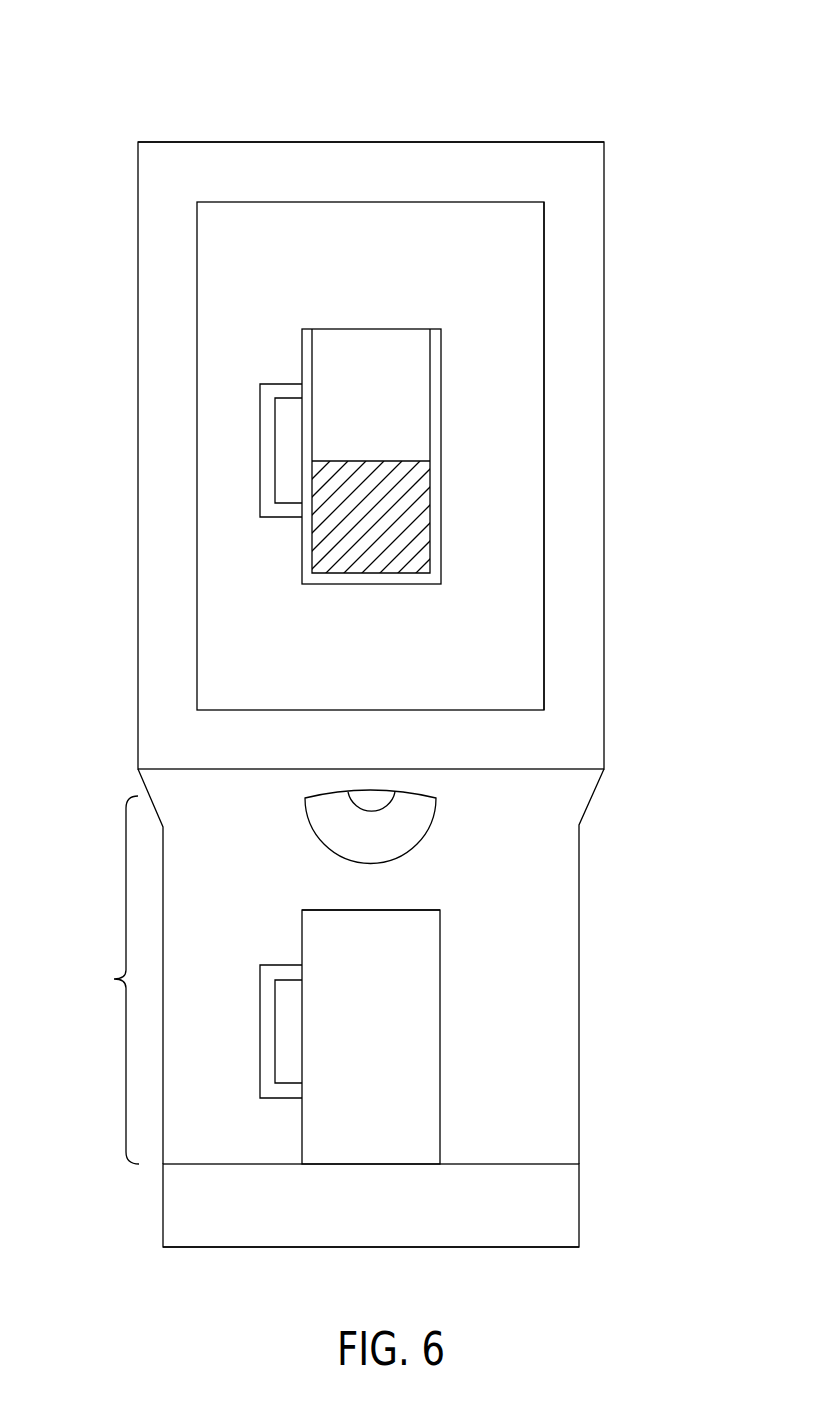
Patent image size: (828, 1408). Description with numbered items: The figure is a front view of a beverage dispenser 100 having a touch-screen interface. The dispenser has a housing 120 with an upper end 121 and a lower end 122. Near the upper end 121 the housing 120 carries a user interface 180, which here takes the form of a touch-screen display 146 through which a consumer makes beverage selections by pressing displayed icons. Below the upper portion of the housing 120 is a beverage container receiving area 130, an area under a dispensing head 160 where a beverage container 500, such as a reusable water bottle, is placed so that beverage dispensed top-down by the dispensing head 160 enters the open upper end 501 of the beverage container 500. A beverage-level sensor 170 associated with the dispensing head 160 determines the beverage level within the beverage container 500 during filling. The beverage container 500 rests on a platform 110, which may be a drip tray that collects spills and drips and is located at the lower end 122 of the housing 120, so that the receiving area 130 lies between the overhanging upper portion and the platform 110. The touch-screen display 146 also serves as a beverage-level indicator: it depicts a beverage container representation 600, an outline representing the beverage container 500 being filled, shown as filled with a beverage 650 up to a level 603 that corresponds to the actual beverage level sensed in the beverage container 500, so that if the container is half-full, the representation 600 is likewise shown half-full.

The beverage dispenser 100 is at (137, 80).
The platform 110 is at (557, 1222).
The housing 120 is at (604, 550).
The upper end 121 is at (513, 142).
The lower end 122 is at (532, 1247).
The beverage container receiving area 130 is at (110, 980).
The touch-screen display 146 is at (525, 353).
The dispensing head 160 is at (353, 849).
The beverage-level sensor 170 is at (372, 800).
The user interface 180 is at (572, 261).
The beverage container 500 is at (441, 1034).
The open upper end 501 is at (422, 910).
The beverage container representation 600 is at (287, 372).
The level 603 is at (410, 461).
The beverage 650 is at (407, 518).